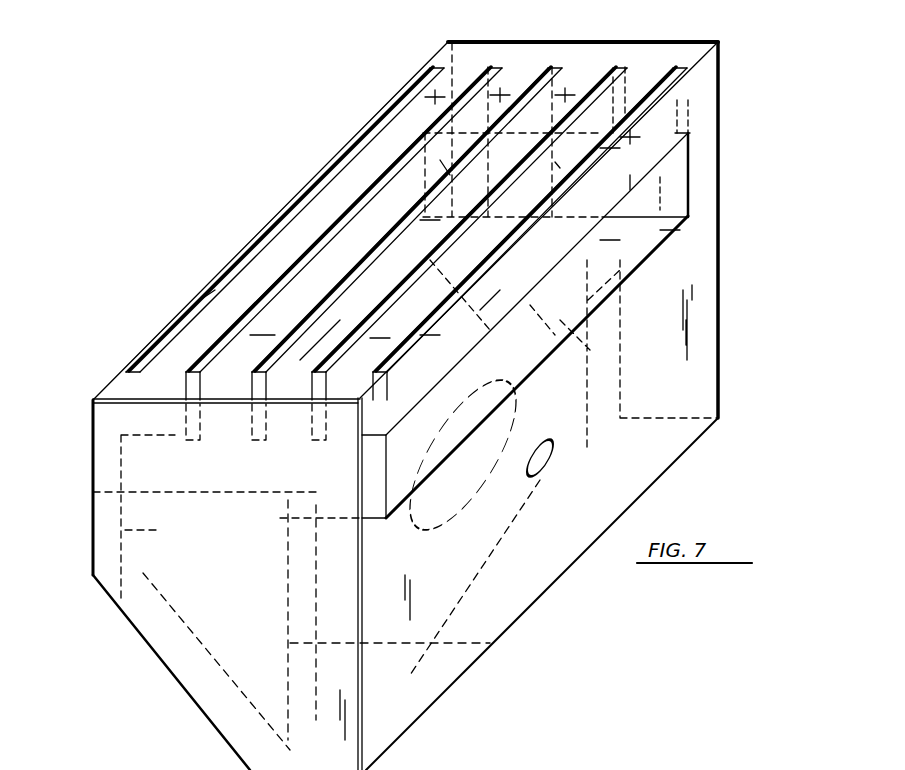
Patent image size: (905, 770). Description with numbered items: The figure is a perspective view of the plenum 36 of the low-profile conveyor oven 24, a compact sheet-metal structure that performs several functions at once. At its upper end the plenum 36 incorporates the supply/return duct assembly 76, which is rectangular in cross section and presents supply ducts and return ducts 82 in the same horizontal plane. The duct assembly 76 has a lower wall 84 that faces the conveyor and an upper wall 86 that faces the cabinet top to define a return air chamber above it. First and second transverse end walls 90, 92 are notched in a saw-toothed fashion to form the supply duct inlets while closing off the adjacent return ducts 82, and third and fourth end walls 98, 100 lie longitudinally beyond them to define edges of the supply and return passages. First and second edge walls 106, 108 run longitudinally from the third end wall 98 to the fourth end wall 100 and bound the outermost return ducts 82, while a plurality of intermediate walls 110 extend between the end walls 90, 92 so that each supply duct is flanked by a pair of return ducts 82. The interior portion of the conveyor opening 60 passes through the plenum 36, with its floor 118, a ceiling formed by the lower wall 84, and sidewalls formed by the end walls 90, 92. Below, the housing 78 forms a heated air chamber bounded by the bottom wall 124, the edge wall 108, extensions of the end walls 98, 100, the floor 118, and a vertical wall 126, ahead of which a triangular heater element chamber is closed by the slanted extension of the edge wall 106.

The low-profile conveyor oven 24 is at (825, 733).
The plenum 36 is at (737, 170).
The conveyor opening 60 is at (570, 282).
The supply/return duct assembly 76 is at (612, 42).
The housing 78 is at (153, 642).
The return ducts 82 is at (400, 163).
The lower surface or wall 84 is at (672, 157).
The upper surface or wall 86 is at (397, 125).
The first transverse end wall 90 is at (656, 192).
The second transverse end wall 92 is at (395, 496).
The third transverse end wall 98 is at (445, 47).
The fourth transverse end wall 100 is at (153, 563).
The first transversely opposed edge wall 106 is at (318, 178).
The second transversely opposed edge wall 108 is at (688, 322).
The intermediate walls 110 is at (187, 395).
The floor 118 is at (628, 247).
The bottom wall 124 is at (462, 672).
The vertical wall 126 is at (492, 645).